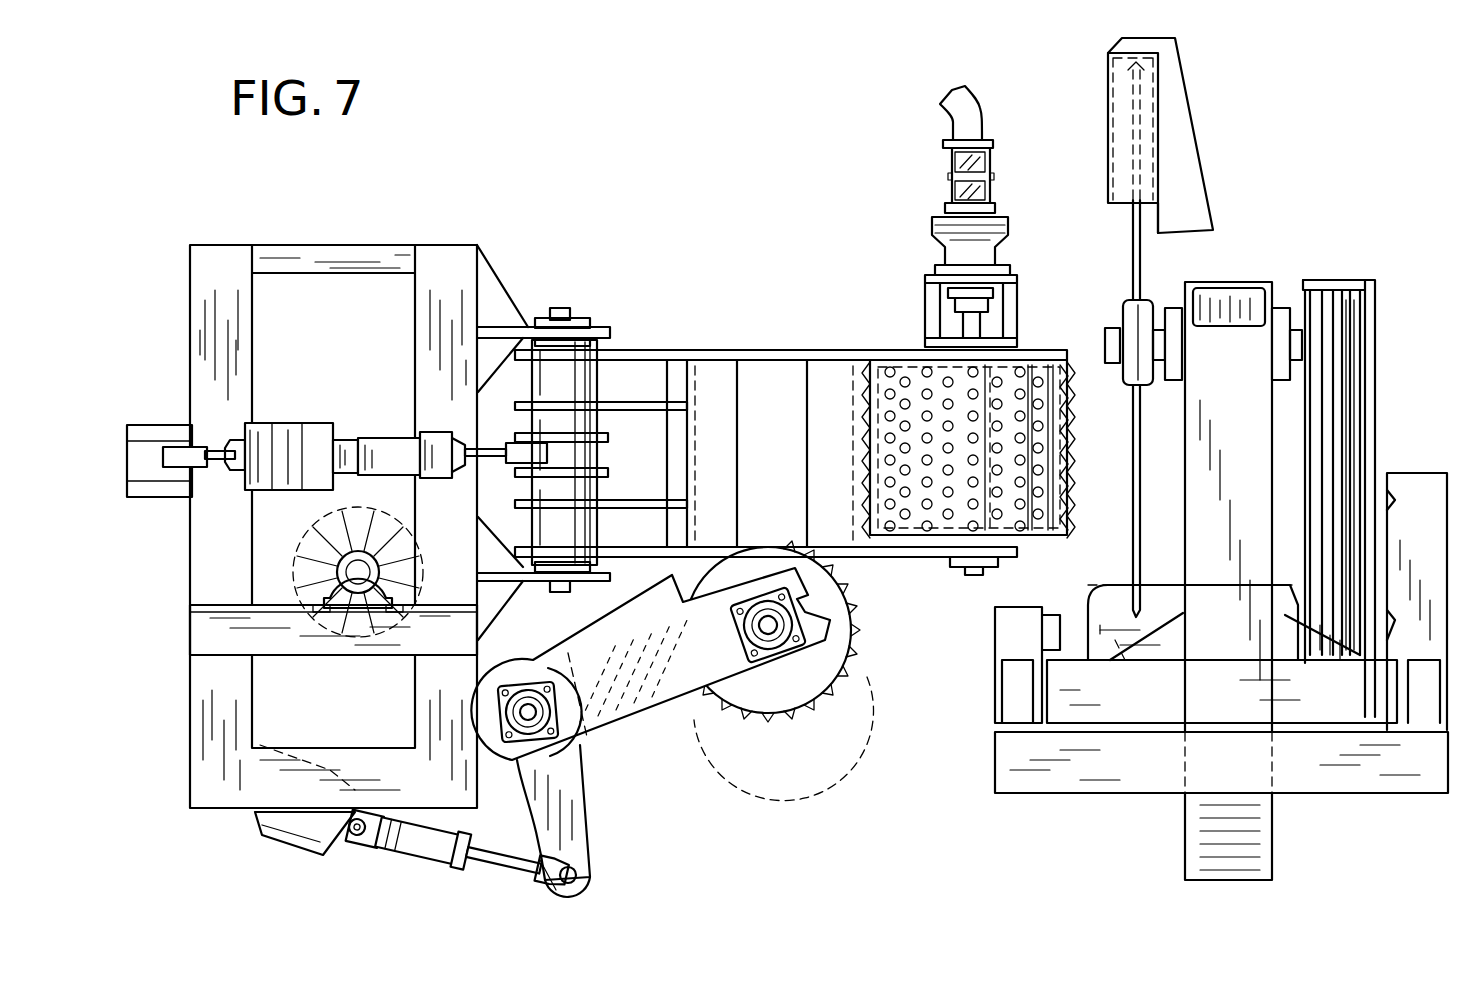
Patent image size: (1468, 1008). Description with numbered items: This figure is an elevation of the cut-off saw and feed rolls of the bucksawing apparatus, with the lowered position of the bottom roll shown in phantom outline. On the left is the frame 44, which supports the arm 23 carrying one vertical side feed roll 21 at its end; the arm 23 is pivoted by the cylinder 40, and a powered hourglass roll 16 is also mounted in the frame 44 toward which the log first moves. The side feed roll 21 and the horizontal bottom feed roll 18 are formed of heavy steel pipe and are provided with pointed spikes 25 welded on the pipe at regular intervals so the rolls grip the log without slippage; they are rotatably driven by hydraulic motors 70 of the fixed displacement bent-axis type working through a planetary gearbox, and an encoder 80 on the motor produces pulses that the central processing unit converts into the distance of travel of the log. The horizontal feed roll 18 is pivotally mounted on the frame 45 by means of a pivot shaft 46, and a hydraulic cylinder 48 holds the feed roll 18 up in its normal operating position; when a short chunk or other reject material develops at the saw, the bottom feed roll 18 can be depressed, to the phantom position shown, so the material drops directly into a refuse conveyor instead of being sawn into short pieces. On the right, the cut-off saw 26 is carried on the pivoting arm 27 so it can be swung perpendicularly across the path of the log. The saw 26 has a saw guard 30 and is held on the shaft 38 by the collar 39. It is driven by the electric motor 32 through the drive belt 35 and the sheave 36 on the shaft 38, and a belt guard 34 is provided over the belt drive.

The powered hourglass roll 16 is at (303, 519).
The horizontal bottom feed roll 18 is at (866, 638).
The vertical side feed roll 21 is at (905, 372).
The arm 23 is at (745, 350).
The spikes 25 is at (968, 510).
The cut-off saw 26 is at (1128, 252).
The pivoting arm 27 is at (1257, 532).
The saw guard 30 is at (1198, 120).
The electric motor 32 is at (1112, 585).
The belt guard 34 is at (1380, 278).
The drive belt 35 is at (1352, 438).
The sheave 36 is at (1296, 312).
The shaft 38 is at (1103, 345).
The collar 39 is at (1158, 305).
The cylinder 40 is at (398, 440).
The frame 44 is at (440, 240).
The frame 45 is at (655, 700).
The pivot shaft 46 is at (525, 712).
The hydraulic cylinder 48 is at (432, 868).
The hydraulic motor 70 is at (932, 228).
The encoder 80 is at (947, 164).